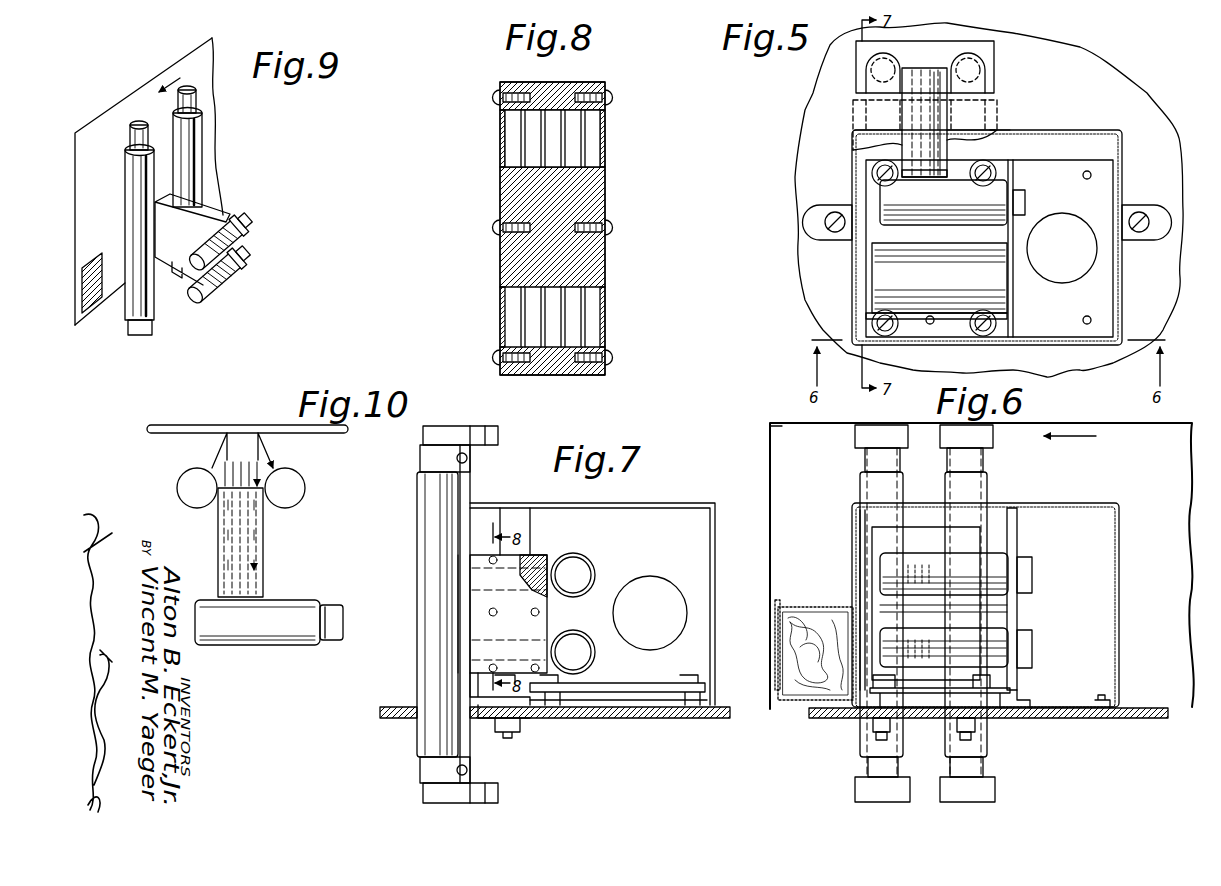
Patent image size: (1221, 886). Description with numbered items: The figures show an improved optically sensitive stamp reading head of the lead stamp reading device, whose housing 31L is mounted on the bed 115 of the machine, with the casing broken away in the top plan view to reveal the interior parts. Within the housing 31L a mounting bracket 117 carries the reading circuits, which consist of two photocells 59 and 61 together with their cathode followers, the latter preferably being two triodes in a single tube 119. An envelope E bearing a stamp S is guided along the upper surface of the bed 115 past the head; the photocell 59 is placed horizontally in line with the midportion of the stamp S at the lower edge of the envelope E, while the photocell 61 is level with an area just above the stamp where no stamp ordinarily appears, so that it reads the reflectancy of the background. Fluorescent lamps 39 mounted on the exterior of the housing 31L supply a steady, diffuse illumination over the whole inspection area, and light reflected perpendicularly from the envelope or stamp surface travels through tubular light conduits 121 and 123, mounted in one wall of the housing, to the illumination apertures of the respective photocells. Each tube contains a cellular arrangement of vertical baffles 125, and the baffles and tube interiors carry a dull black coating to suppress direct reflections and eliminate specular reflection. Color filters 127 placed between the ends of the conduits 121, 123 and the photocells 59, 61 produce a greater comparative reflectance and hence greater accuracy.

In FIG. 9, the fluorescent lamps 39 is at (128, 201).
In FIG. 5, the fluorescent lamps 39 is at (857, 70).
In FIG. 6, the fluorescent lamps 39 is at (862, 482).
In FIG. 7, the fluorescent lamps 39 is at (415, 513).
In FIG. 10, the fluorescent lamps 39 is at (184, 478).
In FIG. 9, the photocell 61 is at (235, 252).
In FIG. 5, the photocell 61 is at (980, 213).
In FIG. 6, the photocell 61 is at (961, 567).
In FIG. 7, the photocell 61 is at (585, 568).
In FIG. 10, the photocell 61 is at (274, 640).
In FIG. 9, the photocell 59 is at (228, 282).
In FIG. 6, the photocell 59 is at (1010, 668).
In FIG. 7, the photocell 59 is at (590, 662).
In FIG. 5, the bed 115 is at (1160, 140).
In FIG. 6, the bed 115 is at (1062, 718).
In FIG. 7, the bed 115 is at (596, 718).
In FIG. 5, the mounting bracket 117 is at (1012, 307).
In FIG. 6, the mounting bracket 117 is at (1018, 614).
In FIG. 7, the mounting bracket 117 is at (690, 550).
In FIG. 5, the tube 119 is at (872, 266).
In FIG. 7, the tube 119 is at (680, 614).
In FIG. 8, the tubular light conduit 121 is at (594, 325).
In FIG. 6, the tubular light conduit 121 is at (922, 705).
In FIG. 7, the tubular light conduit 121 is at (468, 645).
In FIG. 8, the tubular light conduit 123 is at (592, 138).
In FIG. 5, the tubular light conduit 123 is at (922, 72).
In FIG. 6, the tubular light conduit 123 is at (927, 572).
In FIG. 7, the tubular light conduit 123 is at (468, 580).
In FIG. 10, the tubular light conduit 123 is at (265, 581).
In FIG. 8, the vertical baffles 125 is at (565, 152).
In FIG. 5, the vertical baffles 125 is at (937, 76).
In FIG. 5, the color filters 127 is at (925, 178).
In FIG. 7, the color filters 127 is at (540, 555).
In FIG. 5, the housing 31L is at (1082, 132).
In FIG. 6, the housing 31L is at (1053, 506).
In FIG. 7, the housing 31L is at (698, 503).
In FIG. 9, the envelope E is at (118, 110).
In FIG. 5, the envelope E is at (989, 200).
In FIG. 6, the envelope E is at (770, 441).
In FIG. 7, the envelope E is at (770, 441).
In FIG. 10, the envelope E is at (210, 433).
In FIG. 9, the stamp S is at (96, 316).
In FIG. 6, the stamp S is at (797, 697).
In FIG. 7, the stamp S is at (770, 669).